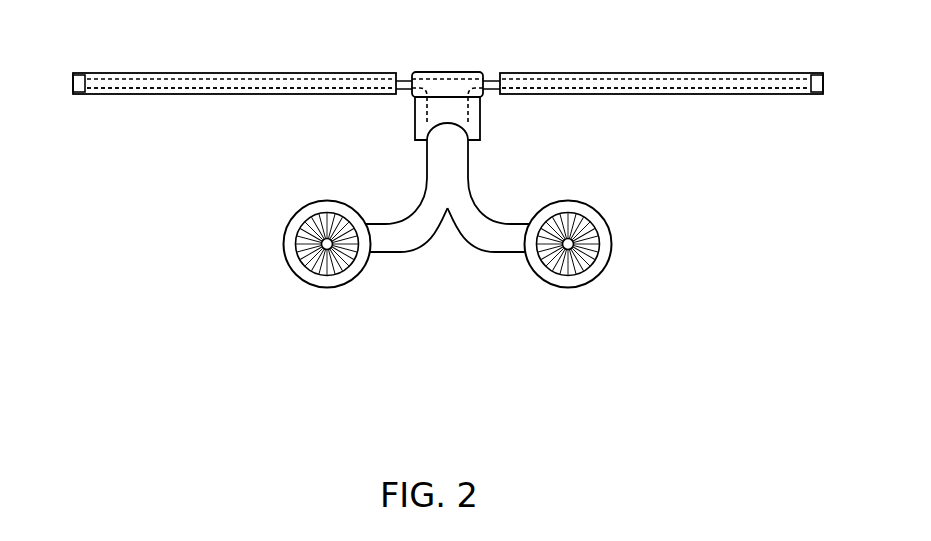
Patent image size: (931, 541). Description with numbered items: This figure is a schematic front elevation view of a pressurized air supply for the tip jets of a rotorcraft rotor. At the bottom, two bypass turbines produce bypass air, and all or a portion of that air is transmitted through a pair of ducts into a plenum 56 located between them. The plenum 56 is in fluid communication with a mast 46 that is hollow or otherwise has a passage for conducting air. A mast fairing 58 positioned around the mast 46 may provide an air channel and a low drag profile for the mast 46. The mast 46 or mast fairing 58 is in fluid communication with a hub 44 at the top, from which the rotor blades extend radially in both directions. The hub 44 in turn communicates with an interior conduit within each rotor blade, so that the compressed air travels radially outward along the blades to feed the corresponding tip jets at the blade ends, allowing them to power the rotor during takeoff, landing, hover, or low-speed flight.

The hub 44 is at (447, 73).
The mast 46 is at (482, 117).
The plenum 56 is at (462, 157).
The mast fairing 58 is at (414, 118).